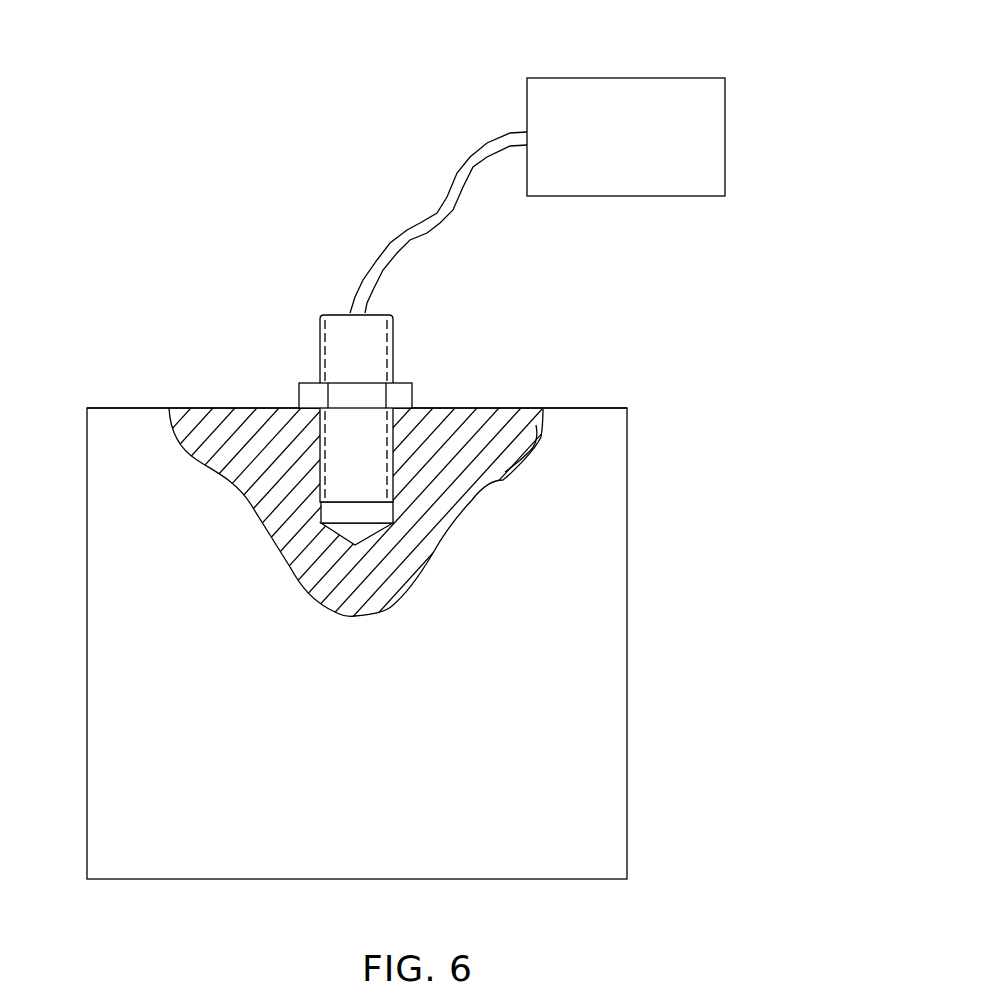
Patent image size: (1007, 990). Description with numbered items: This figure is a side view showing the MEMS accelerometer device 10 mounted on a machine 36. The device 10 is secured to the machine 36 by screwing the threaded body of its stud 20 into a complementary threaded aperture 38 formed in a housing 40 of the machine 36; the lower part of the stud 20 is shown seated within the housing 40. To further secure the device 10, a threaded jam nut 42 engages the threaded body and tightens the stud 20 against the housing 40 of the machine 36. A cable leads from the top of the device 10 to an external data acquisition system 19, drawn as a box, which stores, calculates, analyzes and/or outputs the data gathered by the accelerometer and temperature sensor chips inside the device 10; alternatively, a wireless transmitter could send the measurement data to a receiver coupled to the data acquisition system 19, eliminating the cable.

The MEMS accelerometer device 10 is at (392, 334).
The data acquisition system 19 is at (625, 78).
The stud 20 is at (397, 467).
The machine 36 is at (98, 643).
The threaded aperture 38 is at (357, 412).
The housing 40 is at (507, 408).
The threaded jam nut 42 is at (308, 401).